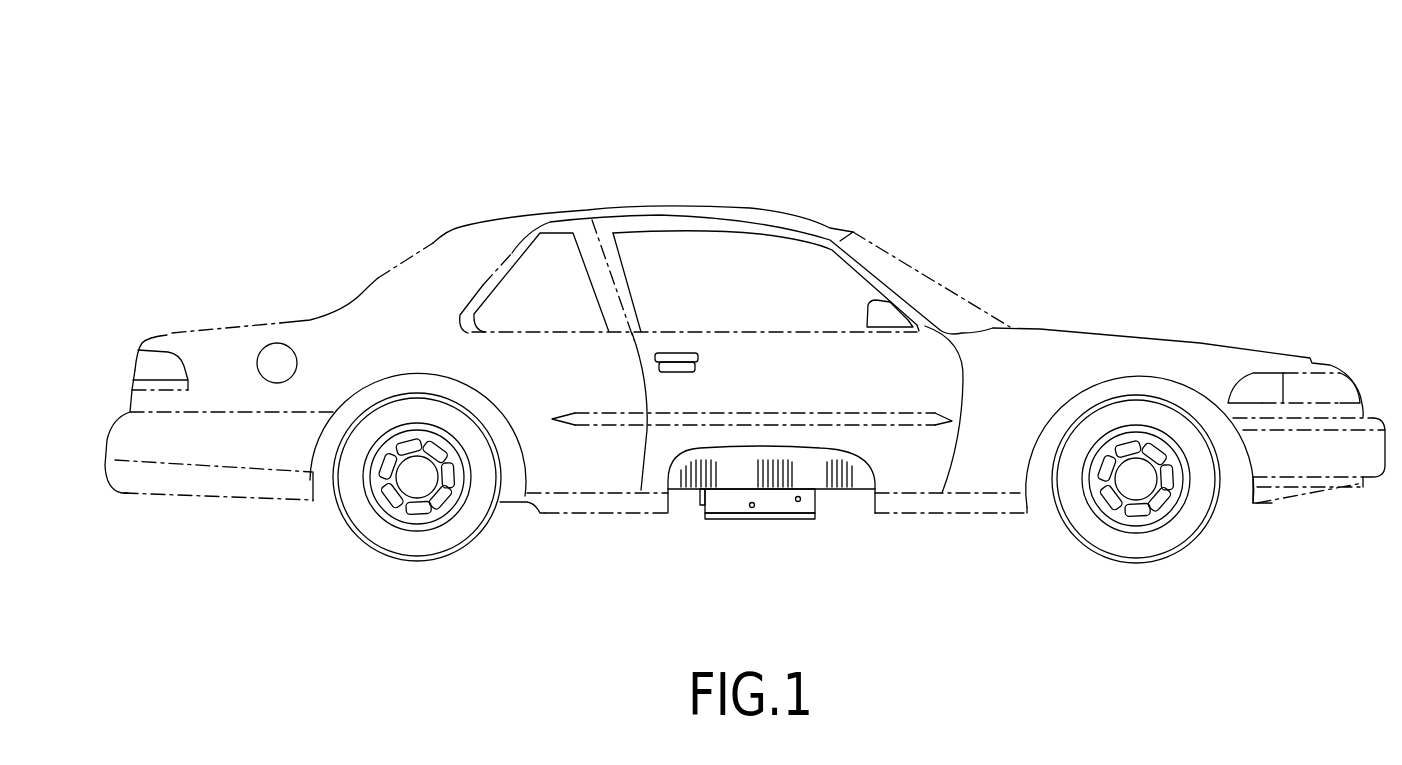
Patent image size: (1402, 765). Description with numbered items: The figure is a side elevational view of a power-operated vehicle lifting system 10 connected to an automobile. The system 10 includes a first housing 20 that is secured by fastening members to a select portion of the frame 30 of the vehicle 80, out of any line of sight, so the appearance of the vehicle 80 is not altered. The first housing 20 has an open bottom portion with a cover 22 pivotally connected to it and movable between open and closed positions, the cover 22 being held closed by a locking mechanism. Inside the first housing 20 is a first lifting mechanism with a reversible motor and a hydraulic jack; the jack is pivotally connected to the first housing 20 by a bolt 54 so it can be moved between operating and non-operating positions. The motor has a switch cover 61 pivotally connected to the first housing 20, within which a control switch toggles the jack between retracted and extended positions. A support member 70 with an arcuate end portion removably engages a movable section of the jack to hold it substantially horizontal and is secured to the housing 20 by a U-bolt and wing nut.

The power-operated vehicle lifting system 10 is at (745, 341).
The first housing 20 is at (810, 500).
The cover 22 is at (728, 515).
The frame 30 is at (848, 480).
The bolt 54 is at (752, 505).
The switch cover 61 is at (700, 502).
The support member 70 is at (792, 563).
The vehicle 80 is at (830, 227).